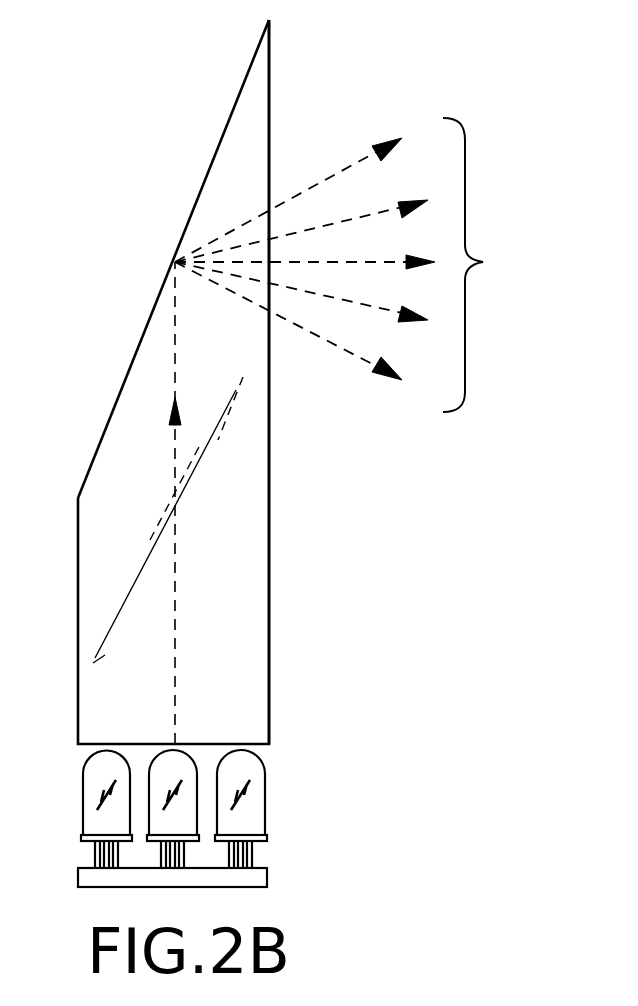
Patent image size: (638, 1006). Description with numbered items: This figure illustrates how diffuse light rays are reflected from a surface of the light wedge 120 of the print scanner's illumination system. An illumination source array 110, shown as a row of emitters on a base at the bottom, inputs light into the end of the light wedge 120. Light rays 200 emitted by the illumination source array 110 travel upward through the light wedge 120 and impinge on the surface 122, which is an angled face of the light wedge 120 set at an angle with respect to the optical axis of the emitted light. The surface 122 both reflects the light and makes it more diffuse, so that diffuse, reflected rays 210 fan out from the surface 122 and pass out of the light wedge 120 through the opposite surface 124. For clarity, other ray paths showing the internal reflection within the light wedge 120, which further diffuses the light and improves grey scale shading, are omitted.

The illumination source array 110 is at (298, 807).
The light wedge 120 is at (263, 604).
The surface 122 is at (198, 200).
The surface 124 is at (268, 480).
The light rays 200 is at (175, 372).
The diffuse, reflected rays 210 is at (364, 265).